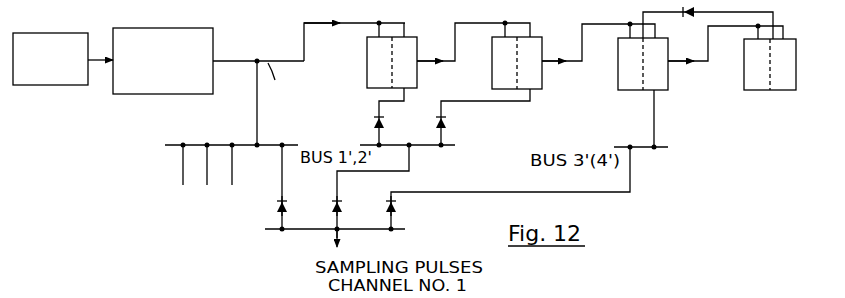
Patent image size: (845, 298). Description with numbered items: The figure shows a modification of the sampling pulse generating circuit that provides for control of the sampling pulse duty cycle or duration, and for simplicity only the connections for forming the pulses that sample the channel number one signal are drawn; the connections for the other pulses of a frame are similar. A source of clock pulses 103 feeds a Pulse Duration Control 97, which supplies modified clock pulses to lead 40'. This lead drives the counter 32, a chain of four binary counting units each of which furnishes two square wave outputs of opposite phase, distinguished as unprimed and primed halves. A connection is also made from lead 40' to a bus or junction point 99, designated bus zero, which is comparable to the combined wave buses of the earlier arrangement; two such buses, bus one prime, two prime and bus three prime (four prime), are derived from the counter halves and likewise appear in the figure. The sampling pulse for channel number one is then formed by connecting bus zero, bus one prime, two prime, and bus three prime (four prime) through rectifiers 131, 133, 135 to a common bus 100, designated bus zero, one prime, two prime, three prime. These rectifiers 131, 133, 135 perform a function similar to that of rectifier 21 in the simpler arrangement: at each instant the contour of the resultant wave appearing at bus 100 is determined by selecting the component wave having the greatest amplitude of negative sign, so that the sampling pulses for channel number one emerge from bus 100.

The clock pulses source 103 is at (30, 86).
The pulse duration control 97 is at (145, 28).
The lead 40' is at (275, 91).
The counter 32 is at (568, 26).
The bus or junction point 99 is at (190, 145).
The rectifier 131 is at (278, 208).
The rectifier 133 is at (334, 207).
The rectifier 135 is at (389, 207).
The bus 100 is at (398, 230).
The rectifier 21 is at (260, 297).